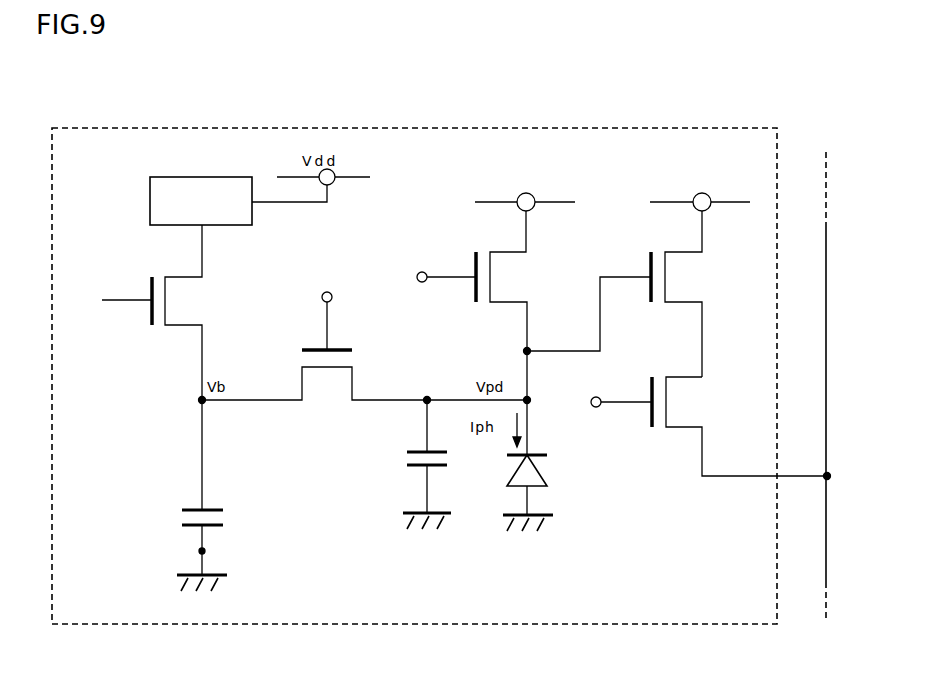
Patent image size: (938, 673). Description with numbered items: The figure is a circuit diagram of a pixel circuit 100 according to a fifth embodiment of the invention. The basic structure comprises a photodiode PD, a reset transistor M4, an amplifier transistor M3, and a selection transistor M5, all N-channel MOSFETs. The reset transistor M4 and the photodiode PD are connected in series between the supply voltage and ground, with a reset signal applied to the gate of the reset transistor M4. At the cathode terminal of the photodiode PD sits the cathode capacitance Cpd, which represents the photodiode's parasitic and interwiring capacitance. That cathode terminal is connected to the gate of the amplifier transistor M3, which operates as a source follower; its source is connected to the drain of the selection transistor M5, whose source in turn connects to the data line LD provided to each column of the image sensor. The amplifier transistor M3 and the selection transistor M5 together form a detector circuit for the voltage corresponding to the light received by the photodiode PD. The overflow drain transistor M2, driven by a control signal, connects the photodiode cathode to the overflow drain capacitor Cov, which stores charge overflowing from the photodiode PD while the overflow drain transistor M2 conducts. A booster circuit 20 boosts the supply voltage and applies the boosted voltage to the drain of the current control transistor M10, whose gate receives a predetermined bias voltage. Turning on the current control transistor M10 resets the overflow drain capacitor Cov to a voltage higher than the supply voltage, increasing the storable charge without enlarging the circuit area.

The pixel circuit 100 is at (625, 128).
The booster circuit 20 is at (203, 177).
The data line LD is at (827, 325).
The current control transistor M10 is at (156, 312).
The overflow drain transistor M2 is at (364, 349).
The amplifier transistor M3 is at (700, 277).
The reset transistor M4 is at (474, 288).
The selection transistor M5 is at (686, 426).
The photodiode PD is at (513, 465).
The cathode capacitance Cpd is at (401, 463).
The overflow drain capacitor Cov is at (222, 495).